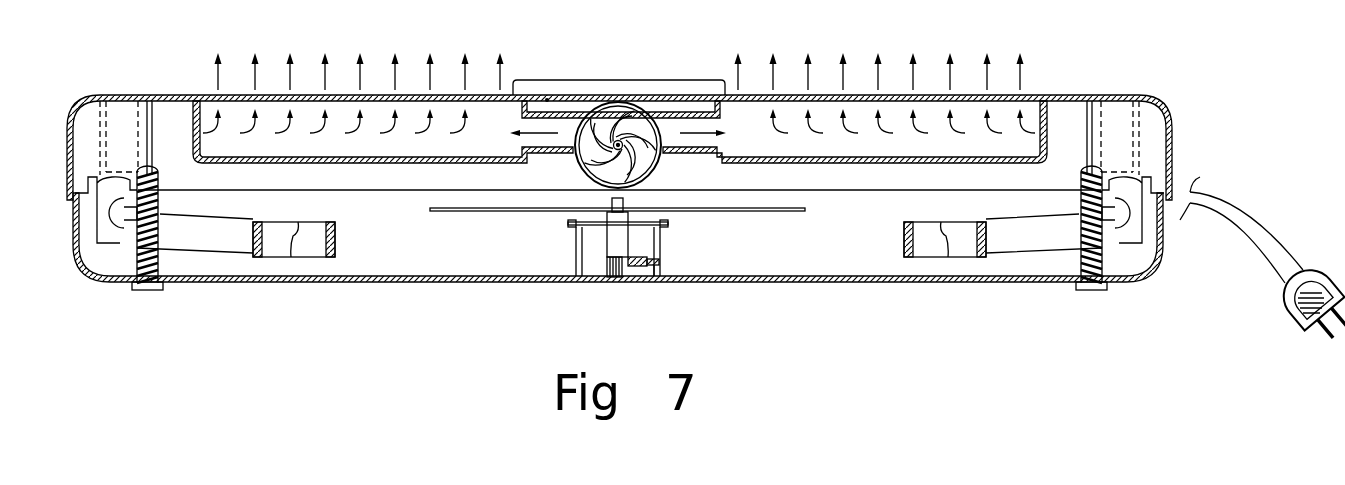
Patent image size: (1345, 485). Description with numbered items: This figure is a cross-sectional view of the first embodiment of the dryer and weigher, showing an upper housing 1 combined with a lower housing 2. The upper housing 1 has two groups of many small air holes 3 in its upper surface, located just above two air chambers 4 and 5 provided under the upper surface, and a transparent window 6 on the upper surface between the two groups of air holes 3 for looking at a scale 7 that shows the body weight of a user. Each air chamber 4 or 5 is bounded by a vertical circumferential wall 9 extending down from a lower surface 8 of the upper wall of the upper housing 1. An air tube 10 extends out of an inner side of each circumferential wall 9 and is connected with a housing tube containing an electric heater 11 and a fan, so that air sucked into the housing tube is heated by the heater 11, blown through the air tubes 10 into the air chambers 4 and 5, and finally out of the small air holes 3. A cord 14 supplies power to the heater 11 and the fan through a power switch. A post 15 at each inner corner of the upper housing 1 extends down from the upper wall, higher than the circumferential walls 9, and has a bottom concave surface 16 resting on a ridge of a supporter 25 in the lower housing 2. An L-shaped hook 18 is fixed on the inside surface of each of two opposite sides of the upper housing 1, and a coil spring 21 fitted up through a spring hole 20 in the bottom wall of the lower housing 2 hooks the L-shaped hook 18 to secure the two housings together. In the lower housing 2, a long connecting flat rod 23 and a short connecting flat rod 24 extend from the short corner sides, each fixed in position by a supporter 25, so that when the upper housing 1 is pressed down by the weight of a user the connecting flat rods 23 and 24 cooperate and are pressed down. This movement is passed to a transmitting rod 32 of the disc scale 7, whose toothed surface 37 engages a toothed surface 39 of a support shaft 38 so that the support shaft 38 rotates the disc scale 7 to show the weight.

The upper housing 1 is at (1125, 92).
The lower housing 2 is at (885, 280).
The small air holes 3 is at (430, 97).
The air chamber 4 is at (375, 113).
The air chamber 5 is at (865, 113).
The transparent window 6 is at (597, 82).
The scale 7 is at (767, 211).
The lower surface 8 is at (547, 99).
The vertical circumferential wall 9 is at (197, 133).
The air tube 10 is at (556, 152).
The electric heater 11 is at (633, 101).
The cord 14 is at (1268, 238).
The post 15 is at (100, 133).
The bottom concave surface 16 is at (90, 177).
The L-shaped hook 18 is at (152, 147).
The spring hole 20 is at (162, 287).
The coil spring 21 is at (132, 283).
The long connecting flat rod 23 is at (237, 220).
The short connecting flat rod 24 is at (280, 222).
The supporter 25 is at (105, 208).
The transmitting rod 32 is at (643, 264).
The toothed surface 37 is at (632, 253).
The support shaft 38 is at (613, 232).
The toothed surface 39 is at (612, 278).